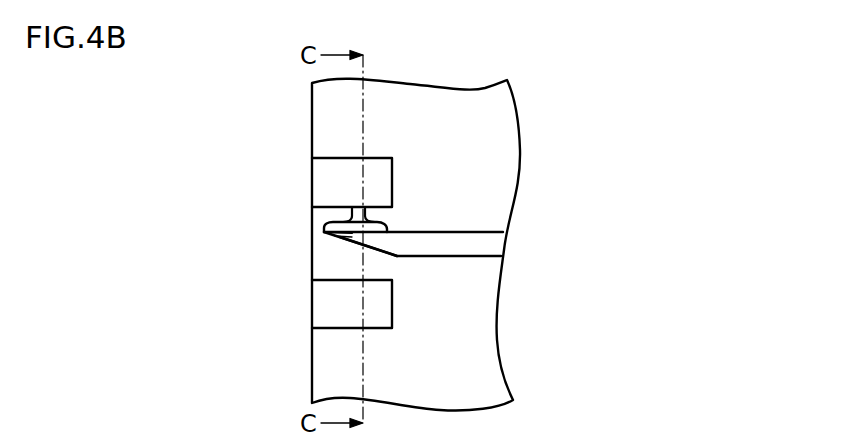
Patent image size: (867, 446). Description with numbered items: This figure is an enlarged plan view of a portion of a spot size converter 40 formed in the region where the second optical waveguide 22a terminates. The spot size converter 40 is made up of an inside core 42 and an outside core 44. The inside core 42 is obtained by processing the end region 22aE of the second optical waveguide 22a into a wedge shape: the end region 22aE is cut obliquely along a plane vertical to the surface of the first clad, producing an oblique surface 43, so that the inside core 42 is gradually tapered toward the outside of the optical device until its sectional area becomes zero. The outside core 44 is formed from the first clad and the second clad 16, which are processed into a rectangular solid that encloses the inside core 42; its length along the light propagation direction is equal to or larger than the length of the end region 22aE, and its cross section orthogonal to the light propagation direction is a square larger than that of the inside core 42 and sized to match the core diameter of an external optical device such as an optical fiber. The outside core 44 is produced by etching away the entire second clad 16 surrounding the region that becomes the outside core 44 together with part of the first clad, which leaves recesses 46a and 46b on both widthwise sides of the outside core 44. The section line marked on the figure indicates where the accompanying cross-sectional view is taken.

The second clad 16 is at (472, 101).
The second optical waveguide 22a is at (497, 243).
The end region of the second optical waveguide 22aE is at (352, 207).
The spot size converter 40 is at (253, 205).
The inside core 42 is at (332, 238).
The oblique surface 43 is at (374, 250).
The outside core 44 is at (322, 217).
The recess 46a is at (328, 181).
The recess 46b is at (328, 305).